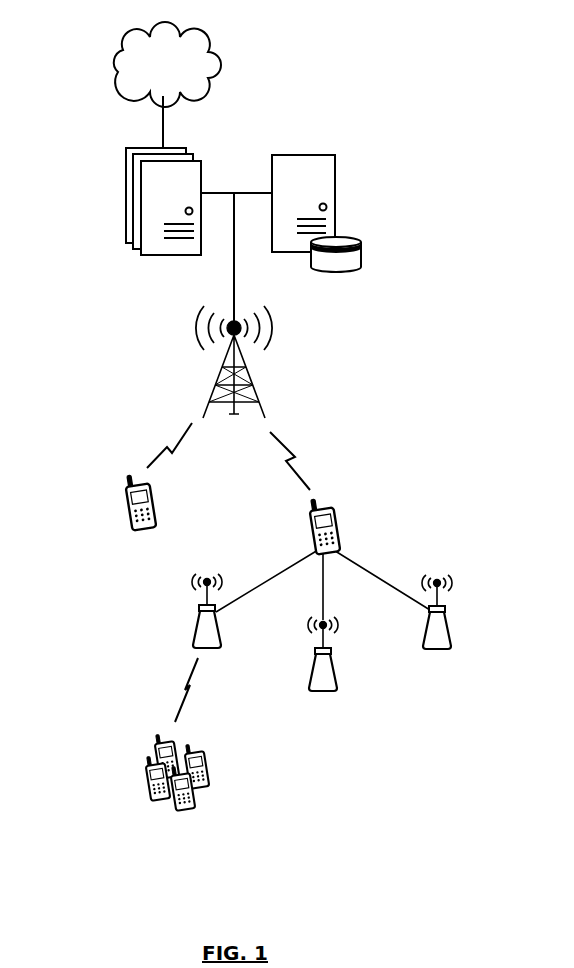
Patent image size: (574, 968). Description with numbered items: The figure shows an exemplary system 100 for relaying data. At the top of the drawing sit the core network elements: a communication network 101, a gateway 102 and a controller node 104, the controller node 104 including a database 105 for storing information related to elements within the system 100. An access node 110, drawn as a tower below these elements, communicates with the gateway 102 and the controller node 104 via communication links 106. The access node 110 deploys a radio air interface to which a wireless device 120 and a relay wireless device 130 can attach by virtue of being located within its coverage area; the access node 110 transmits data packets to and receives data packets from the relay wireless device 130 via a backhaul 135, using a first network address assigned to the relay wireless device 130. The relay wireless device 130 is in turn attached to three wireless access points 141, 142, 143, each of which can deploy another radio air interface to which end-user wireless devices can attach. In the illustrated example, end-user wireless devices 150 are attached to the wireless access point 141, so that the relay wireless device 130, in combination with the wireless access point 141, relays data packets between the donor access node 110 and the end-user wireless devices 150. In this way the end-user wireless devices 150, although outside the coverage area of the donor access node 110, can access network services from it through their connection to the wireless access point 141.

The system 100 is at (349, 45).
The communication network 101 is at (167, 85).
The gateway 102 is at (127, 148).
The controller node 104 is at (332, 155).
The database 105 is at (356, 240).
The communication links 106 is at (234, 270).
The access node 110 is at (221, 377).
The wireless device 120 is at (127, 486).
The relay wireless device 130 is at (337, 516).
The backhaul 135 is at (293, 457).
The wireless access point 141 is at (196, 643).
The wireless access point 142 is at (311, 686).
The wireless access point 143 is at (425, 645).
The end-user wireless devices 150 is at (133, 727).